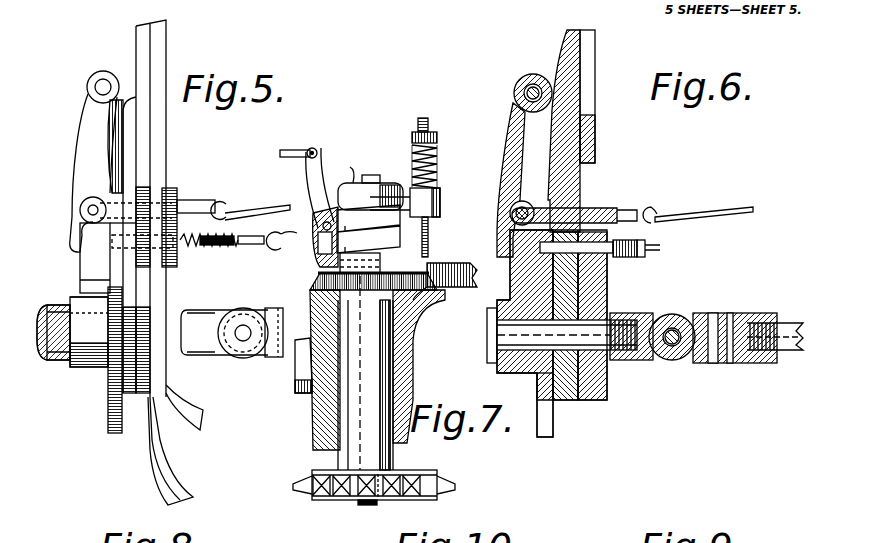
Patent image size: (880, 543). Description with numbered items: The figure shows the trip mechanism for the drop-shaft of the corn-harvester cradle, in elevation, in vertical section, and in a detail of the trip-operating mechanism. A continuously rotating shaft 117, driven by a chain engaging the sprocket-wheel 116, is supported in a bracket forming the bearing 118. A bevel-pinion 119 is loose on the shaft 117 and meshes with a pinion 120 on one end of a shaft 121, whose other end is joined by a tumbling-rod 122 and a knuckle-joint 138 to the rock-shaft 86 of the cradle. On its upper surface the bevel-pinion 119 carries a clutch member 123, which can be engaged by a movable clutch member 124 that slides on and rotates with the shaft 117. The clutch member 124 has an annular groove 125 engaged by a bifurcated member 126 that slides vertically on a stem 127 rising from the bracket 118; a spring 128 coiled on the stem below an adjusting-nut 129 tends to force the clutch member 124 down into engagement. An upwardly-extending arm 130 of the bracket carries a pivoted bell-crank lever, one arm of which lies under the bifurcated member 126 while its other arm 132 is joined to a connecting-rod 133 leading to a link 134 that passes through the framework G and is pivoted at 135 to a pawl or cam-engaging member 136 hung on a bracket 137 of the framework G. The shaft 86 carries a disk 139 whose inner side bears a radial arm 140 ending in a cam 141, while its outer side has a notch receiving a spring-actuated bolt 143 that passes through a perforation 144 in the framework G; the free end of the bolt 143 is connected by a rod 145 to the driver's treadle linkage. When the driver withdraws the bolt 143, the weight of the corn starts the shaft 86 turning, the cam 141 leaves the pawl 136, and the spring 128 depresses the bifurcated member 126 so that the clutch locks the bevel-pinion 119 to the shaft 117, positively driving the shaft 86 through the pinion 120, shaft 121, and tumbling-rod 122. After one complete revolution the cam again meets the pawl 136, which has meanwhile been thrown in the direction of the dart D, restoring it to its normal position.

In FIG. 5, the framework G is at (158, 143).
In FIG. 6, the framework G is at (596, 110).
In FIG. 5, the dart D is at (92, 182).
In FIG. 5, the rock-shaft 86 is at (57, 364).
In FIG. 6, the rock-shaft 86 is at (489, 350).
In FIG. 7, the sprocket-wheel 116 is at (402, 479).
In FIG. 7, the shaft 117 is at (373, 504).
In FIG. 7, the bearing 118 is at (392, 373).
In FIG. 7, the bevel-pinion 119 is at (417, 293).
In FIG. 7, the pinion 120 is at (310, 428).
In FIG. 7, the shaft 121 is at (298, 392).
In FIG. 5, the tumbling-rod 122 is at (280, 358).
In FIG. 6, the tumbling-rod 122 is at (787, 354).
In FIG. 7, the clutch member 123 is at (400, 268).
In FIG. 7, the movable clutch member 124 is at (428, 230).
In FIG. 7, the annular groove 125 is at (342, 172).
In FIG. 7, the bifurcated member 126 is at (440, 200).
In FIG. 7, the stem 127 is at (438, 170).
In FIG. 7, the spring 128 is at (438, 139).
In FIG. 7, the adjusting-nut 129 is at (430, 133).
In FIG. 7, the arm 130 is at (318, 258).
In FIG. 7, the upwardly-extending arm 132 is at (324, 150).
In FIG. 5, the connecting-rod 133 is at (258, 206).
In FIG. 7, the connecting-rod 133 is at (290, 150).
In FIG. 6, the connecting-rod 133 is at (722, 208).
In FIG. 5, the link 134 is at (188, 203).
In FIG. 6, the link 134 is at (608, 205).
In FIG. 5, the pivotal connection 135 is at (84, 212).
In FIG. 6, the pivotal connection 135 is at (565, 192).
In FIG. 5, the pawl or cam-engaging member 136 is at (82, 143).
In FIG. 6, the pawl or cam-engaging member 136 is at (512, 125).
In FIG. 5, the bracket 137 is at (110, 125).
In FIG. 6, the bracket 137 is at (545, 137).
In FIG. 5, the knuckle-joint 138 is at (247, 310).
In FIG. 6, the knuckle-joint 138 is at (686, 315).
In FIG. 5, the disk 139 is at (108, 433).
In FIG. 6, the disk 139 is at (553, 424).
In FIG. 5, the radial arm 140 is at (80, 280).
In FIG. 5, the cam 141 is at (92, 238).
In FIG. 6, the cam 141 is at (510, 258).
In FIG. 5, the spring-actuated bolt 143 is at (182, 252).
In FIG. 6, the spring-actuated bolt 143 is at (605, 270).
In FIG. 5, the perforation 144 is at (89, 332).
In FIG. 6, the perforation 144 is at (653, 207).
In FIG. 5, the rod 145 is at (284, 236).